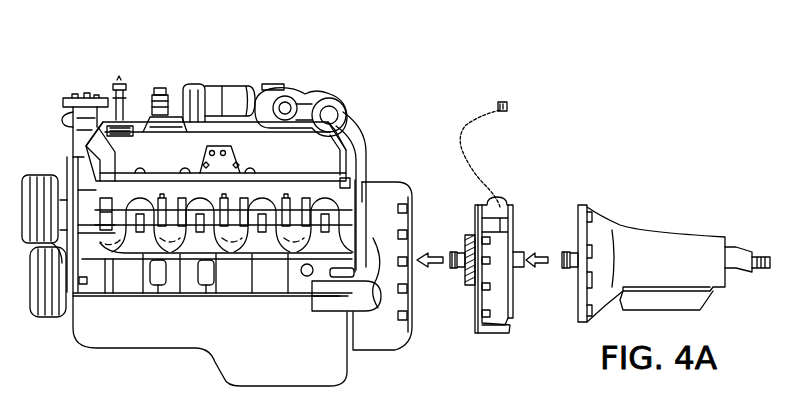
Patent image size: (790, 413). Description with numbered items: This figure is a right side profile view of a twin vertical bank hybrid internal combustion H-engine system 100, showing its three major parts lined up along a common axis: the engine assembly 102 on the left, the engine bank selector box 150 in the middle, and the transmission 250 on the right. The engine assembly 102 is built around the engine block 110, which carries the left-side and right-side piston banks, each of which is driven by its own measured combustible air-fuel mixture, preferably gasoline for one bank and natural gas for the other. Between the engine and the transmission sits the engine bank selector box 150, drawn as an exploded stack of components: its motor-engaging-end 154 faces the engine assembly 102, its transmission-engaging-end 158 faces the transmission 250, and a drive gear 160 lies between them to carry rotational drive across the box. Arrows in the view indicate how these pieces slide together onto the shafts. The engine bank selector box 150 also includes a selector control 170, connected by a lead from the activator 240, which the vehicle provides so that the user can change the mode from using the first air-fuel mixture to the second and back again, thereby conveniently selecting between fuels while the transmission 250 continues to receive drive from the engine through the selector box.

The twin vertical bank hybrid internal combustion H-engine system 100 is at (336, 58).
The engine assembly 102 is at (192, 79).
The engine block 110 is at (134, 269).
The engine bank selector box 150 is at (500, 331).
The motor-engaging-end 154 is at (472, 215).
The transmission-engaging-end 158 is at (515, 219).
The drive gear 160 is at (466, 286).
The selector control 170 is at (509, 100).
The activator 240 is at (499, 100).
The transmission 250 is at (647, 227).